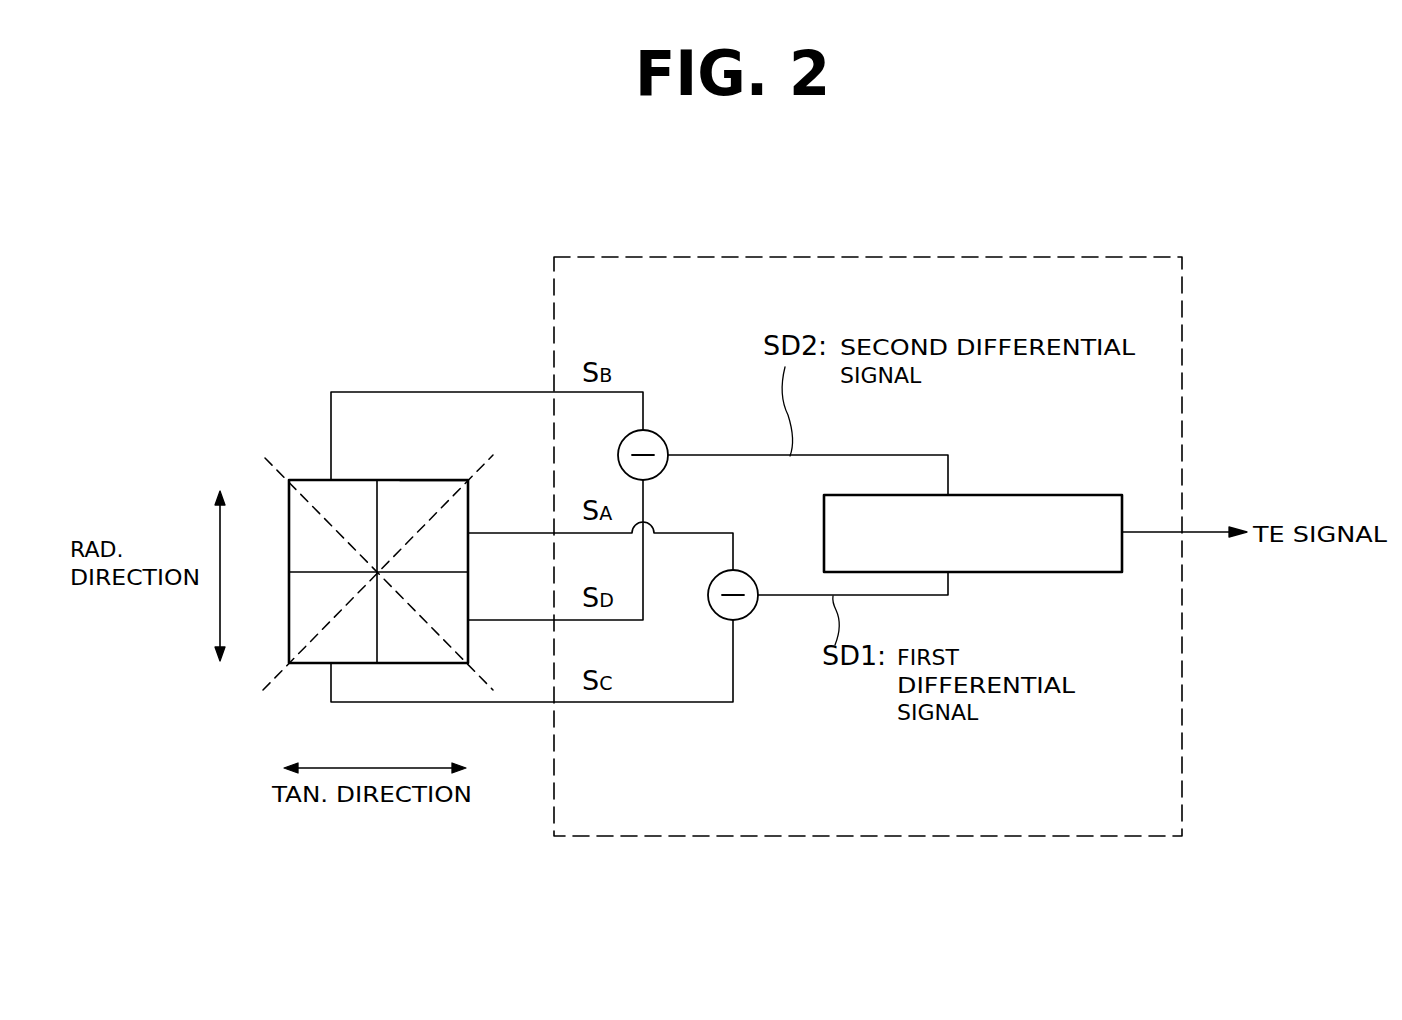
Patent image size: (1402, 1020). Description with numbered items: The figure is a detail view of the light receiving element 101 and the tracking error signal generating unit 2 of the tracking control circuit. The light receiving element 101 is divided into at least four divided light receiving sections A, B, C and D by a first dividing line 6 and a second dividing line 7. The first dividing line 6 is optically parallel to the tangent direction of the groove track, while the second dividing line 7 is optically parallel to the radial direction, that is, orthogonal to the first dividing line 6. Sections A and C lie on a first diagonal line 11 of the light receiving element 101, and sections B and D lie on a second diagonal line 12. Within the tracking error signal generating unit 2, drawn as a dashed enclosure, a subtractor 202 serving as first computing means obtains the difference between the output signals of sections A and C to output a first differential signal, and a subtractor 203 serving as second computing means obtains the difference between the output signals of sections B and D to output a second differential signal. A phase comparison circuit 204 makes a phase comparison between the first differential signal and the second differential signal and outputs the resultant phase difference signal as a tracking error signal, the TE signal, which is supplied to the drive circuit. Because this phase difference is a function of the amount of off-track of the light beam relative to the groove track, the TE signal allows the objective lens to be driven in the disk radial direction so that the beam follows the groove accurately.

The tracking error signal generating unit 2 is at (1150, 257).
The first dividing line 6 is at (433, 572).
The second dividing line 7 is at (378, 500).
The light receiving element 101 is at (434, 480).
The first diagonal line 11 is at (359, 587).
The second diagonal line 12 is at (360, 557).
The subtractor 202 is at (745, 620).
The subtractor 203 is at (656, 438).
The phase comparison circuit 204 is at (1030, 495).